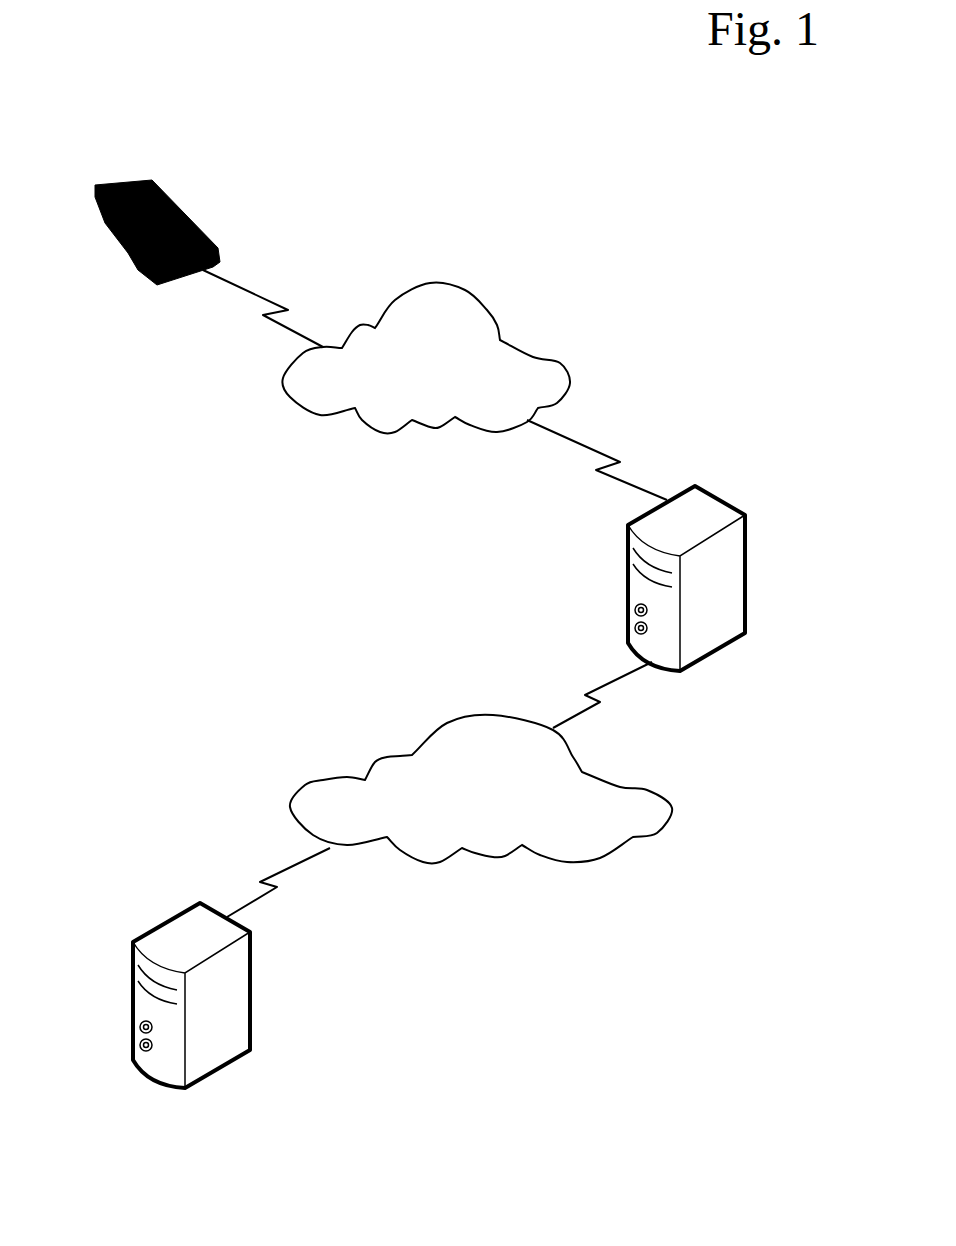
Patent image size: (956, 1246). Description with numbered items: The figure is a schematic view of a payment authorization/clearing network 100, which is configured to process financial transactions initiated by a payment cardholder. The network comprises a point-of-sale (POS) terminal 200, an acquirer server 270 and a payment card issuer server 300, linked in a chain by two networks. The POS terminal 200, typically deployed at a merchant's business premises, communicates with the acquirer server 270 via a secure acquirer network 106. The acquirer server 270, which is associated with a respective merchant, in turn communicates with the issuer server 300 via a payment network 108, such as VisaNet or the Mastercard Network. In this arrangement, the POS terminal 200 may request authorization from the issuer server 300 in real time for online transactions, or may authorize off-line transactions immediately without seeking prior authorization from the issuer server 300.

The payment authorization/clearing network 100 is at (574, 1124).
The point-of-sale (POS) terminal 200 is at (168, 193).
The secure acquirer network 106 is at (487, 310).
The acquirer server 270 is at (725, 502).
The payment network 108 is at (567, 862).
The payment card issuer server 300 is at (167, 1085).